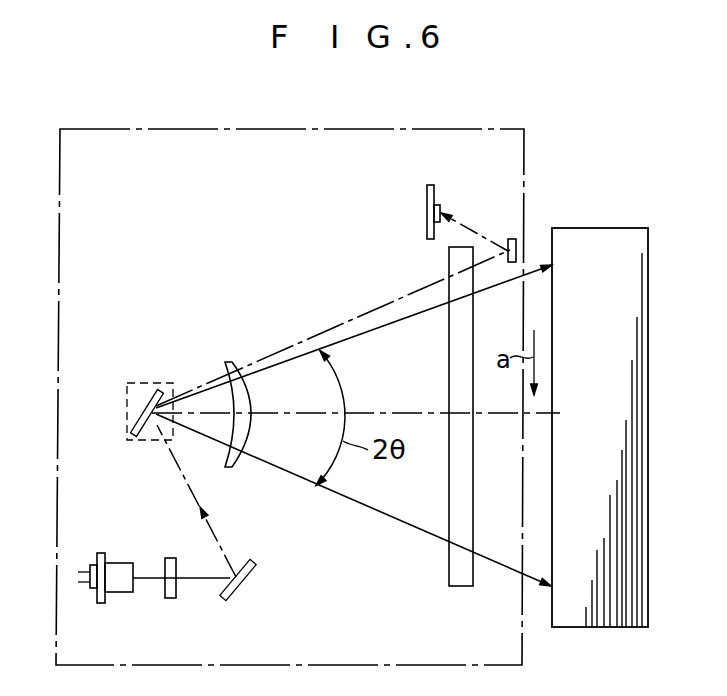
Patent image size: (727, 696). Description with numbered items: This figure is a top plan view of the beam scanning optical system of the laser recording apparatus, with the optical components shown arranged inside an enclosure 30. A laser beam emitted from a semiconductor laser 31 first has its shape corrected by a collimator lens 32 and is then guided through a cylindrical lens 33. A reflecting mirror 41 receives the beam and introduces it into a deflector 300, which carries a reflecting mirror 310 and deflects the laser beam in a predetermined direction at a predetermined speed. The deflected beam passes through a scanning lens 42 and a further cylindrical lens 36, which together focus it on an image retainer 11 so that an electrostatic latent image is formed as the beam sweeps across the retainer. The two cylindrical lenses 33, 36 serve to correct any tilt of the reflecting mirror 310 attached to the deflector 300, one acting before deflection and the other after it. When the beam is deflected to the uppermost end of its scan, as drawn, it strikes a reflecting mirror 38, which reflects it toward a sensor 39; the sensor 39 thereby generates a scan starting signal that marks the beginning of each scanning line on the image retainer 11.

The image retainer 11 is at (599, 228).
The optical scanning unit housing 30 is at (290, 397).
The semiconductor laser 31 is at (94, 568).
The collimator lens 32 is at (122, 563).
The cylindrical lens 33 is at (170, 598).
The cylindrical lens 36 is at (448, 525).
The reflecting mirror 38 is at (512, 239).
The sensor 39 is at (440, 207).
The reflecting mirror 41 is at (245, 593).
The scanning lens 42 is at (232, 362).
The deflector 300 is at (143, 383).
The deflecting mirror 310 is at (133, 425).